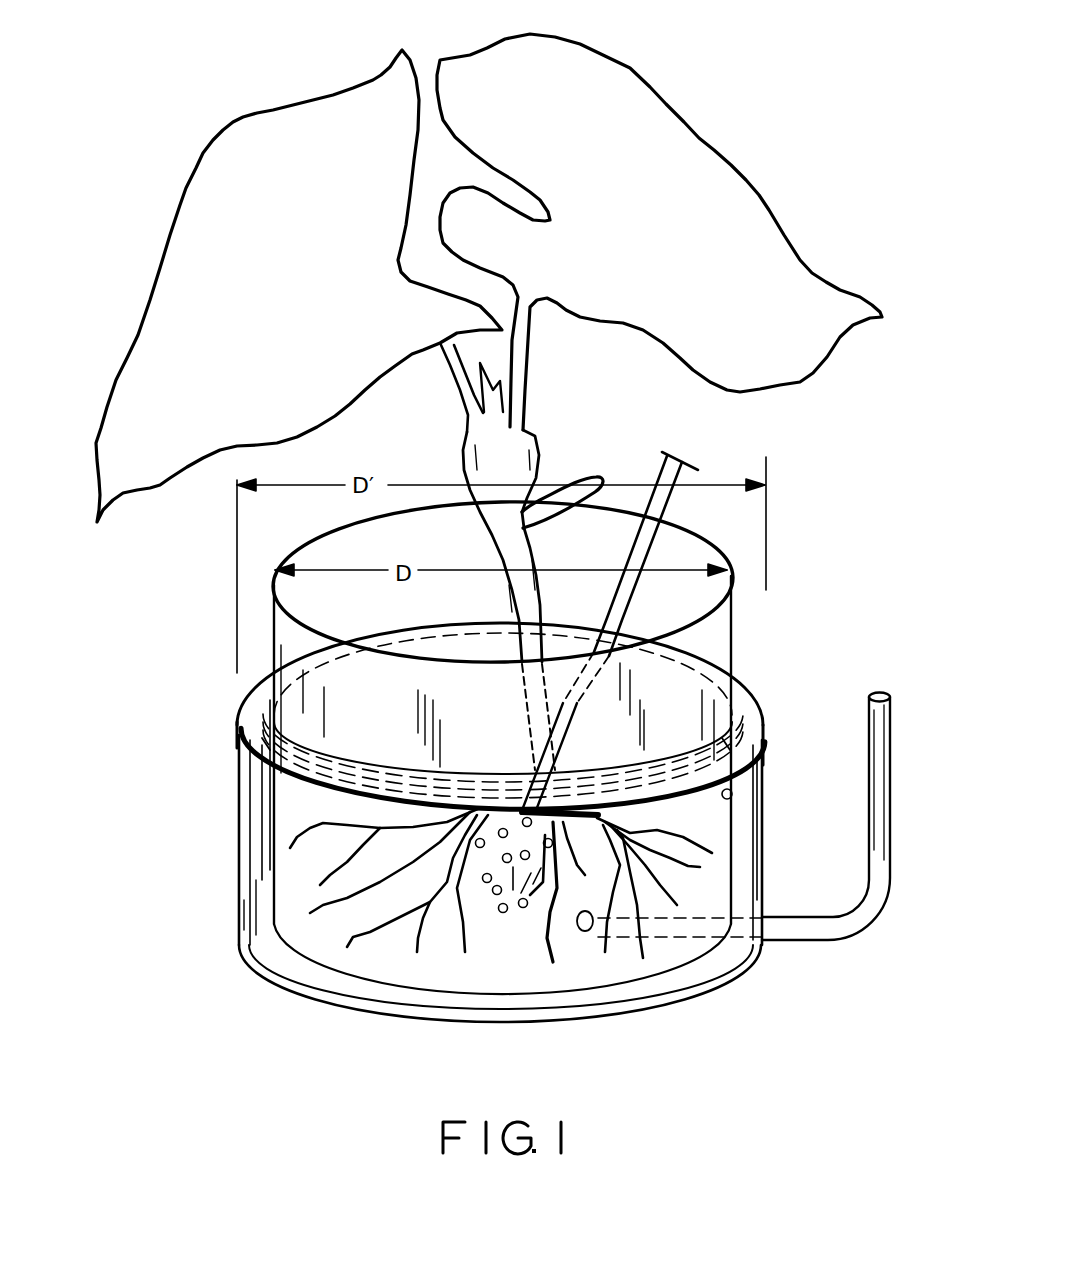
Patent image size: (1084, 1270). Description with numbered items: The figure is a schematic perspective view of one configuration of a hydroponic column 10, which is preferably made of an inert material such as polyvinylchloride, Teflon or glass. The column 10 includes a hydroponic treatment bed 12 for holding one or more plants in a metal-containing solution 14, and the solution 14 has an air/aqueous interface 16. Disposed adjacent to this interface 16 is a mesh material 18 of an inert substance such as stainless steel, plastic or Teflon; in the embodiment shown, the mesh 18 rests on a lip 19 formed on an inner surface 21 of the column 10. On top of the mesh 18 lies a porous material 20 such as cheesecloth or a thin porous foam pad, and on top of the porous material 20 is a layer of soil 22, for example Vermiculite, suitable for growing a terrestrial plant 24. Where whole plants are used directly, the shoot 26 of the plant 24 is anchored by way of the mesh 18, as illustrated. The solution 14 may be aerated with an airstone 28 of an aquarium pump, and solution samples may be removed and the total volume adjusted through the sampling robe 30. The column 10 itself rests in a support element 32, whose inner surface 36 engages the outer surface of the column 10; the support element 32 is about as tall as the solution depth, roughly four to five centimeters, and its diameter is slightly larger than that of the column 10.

The column 10 is at (237, 812).
The hydroponic treatment bed 12 is at (160, 703).
The solution 14 is at (303, 866).
The air/aqueous interface 16 is at (731, 777).
The mesh material 18 is at (243, 777).
The lip 19 is at (248, 745).
The porous material 20 is at (236, 717).
The inner surface 21 is at (727, 799).
The soil 22 is at (243, 693).
The terrestrial plant 24 is at (690, 170).
The shoot 26 is at (520, 594).
The airstone 28 is at (633, 593).
The sampling robe 30 is at (889, 848).
The support element 32 is at (265, 960).
The inner surface 36 is at (327, 980).